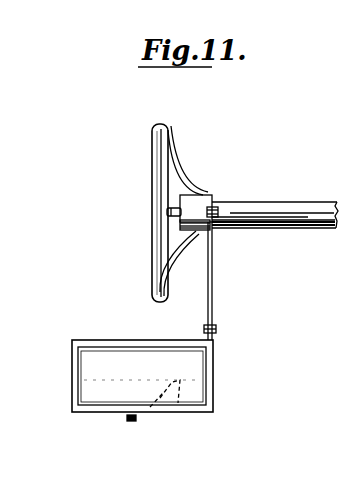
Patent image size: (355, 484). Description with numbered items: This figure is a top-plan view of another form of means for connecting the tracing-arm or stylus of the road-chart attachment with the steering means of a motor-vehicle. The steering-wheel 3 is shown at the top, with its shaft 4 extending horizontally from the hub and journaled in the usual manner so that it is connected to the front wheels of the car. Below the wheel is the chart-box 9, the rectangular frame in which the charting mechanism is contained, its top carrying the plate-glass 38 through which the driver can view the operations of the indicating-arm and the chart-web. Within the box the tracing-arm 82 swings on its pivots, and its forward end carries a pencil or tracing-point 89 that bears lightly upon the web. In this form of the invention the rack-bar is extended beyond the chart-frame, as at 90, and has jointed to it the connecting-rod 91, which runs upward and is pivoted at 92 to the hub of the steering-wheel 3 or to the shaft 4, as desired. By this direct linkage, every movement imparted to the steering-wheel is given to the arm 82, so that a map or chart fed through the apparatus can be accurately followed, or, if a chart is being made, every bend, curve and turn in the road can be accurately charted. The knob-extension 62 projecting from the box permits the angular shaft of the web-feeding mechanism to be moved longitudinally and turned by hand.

The steering-wheel 3 is at (152, 233).
The shaft 4 is at (315, 223).
The chart-box 9 is at (215, 391).
The plate-glass 38 is at (108, 358).
The knob-extension 62 is at (127, 420).
The tracing-arm 82 is at (177, 406).
The tracing-point 89 is at (150, 407).
The extension of the rack-bar 90 is at (217, 328).
The connecting-rod 91 is at (213, 285).
The pivot 92 is at (216, 208).